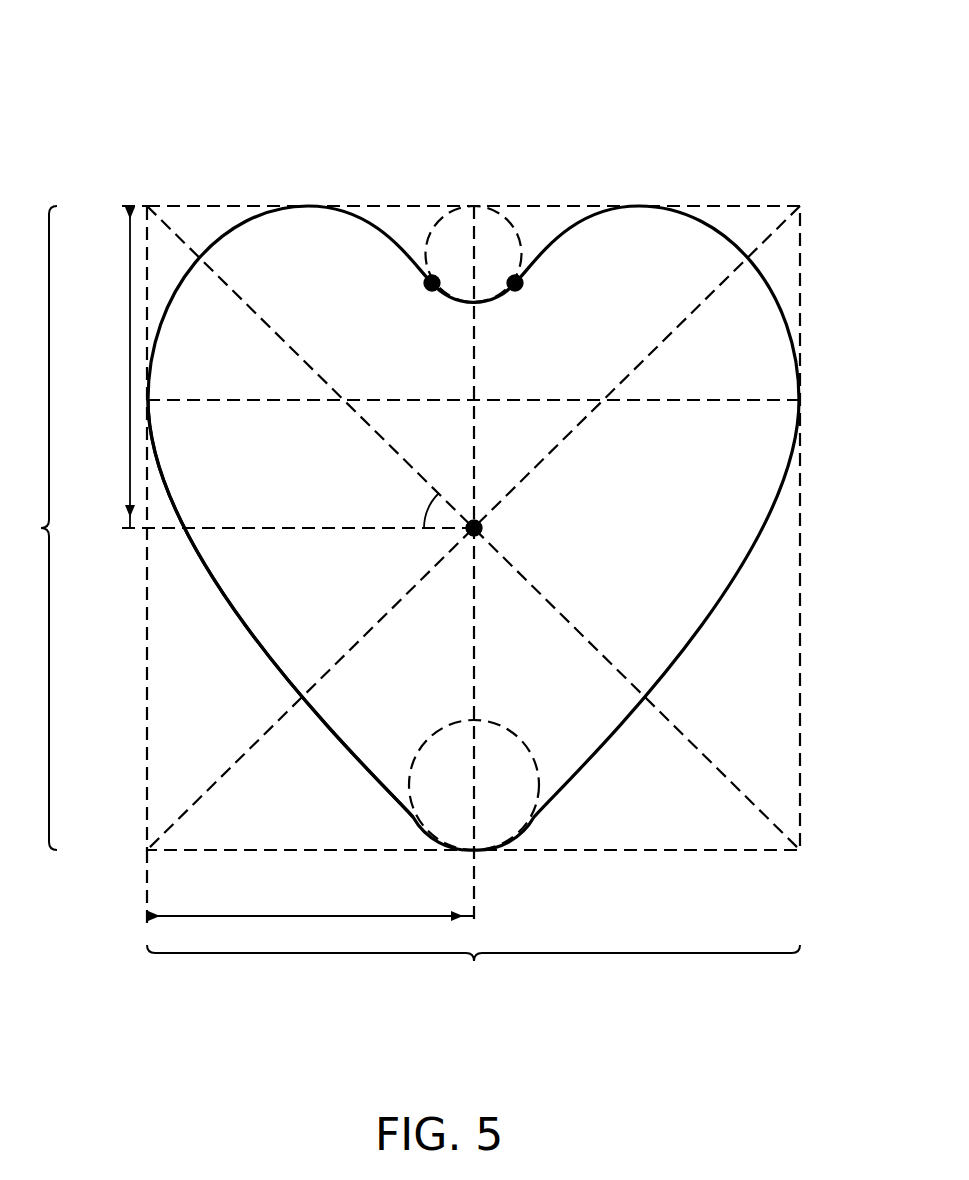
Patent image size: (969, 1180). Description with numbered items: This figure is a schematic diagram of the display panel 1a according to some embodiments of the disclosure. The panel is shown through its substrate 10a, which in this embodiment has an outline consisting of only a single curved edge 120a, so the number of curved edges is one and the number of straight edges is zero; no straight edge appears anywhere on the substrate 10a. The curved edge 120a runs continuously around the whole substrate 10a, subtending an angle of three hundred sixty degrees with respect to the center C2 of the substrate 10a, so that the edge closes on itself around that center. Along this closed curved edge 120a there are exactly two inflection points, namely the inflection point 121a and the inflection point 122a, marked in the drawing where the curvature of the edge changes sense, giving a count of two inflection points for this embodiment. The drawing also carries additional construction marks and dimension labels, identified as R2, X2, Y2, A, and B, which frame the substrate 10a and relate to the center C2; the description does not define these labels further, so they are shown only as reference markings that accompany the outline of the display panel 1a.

The display panel 1a is at (499, 429).
The substrate 10a is at (737, 533).
The curved edge 120a is at (262, 651).
The inflection point 121a is at (452, 222).
The inflection point 122a is at (495, 222).
The center C2 is at (484, 528).
The reference rectangle R2 is at (802, 249).
The horizontal axis X2 is at (683, 402).
The vertical axis Y2 is at (470, 667).
The height A is at (33, 528).
The width B is at (473, 975).